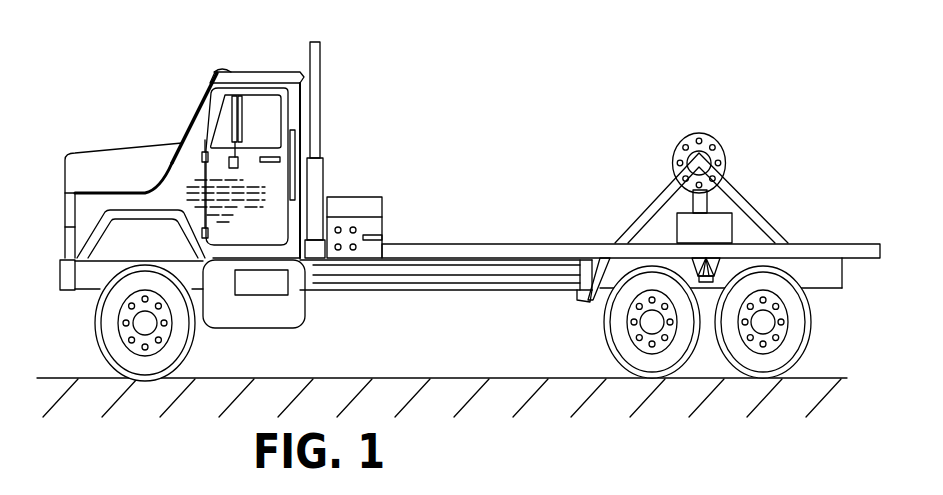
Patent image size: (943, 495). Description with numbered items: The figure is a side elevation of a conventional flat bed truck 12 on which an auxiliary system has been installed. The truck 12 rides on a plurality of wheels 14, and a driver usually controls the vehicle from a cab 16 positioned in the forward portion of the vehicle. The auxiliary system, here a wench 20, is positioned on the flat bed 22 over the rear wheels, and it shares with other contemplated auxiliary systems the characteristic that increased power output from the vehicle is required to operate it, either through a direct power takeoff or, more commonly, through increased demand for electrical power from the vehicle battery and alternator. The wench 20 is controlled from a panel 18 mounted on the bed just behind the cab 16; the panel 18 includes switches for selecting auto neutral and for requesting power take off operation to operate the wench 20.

The flat bed truck 12 is at (513, 261).
The wheels 14 is at (808, 343).
The cab 16 is at (267, 72).
The panel 18 is at (384, 197).
The wench 20 is at (748, 203).
The flat bed 22 is at (848, 243).